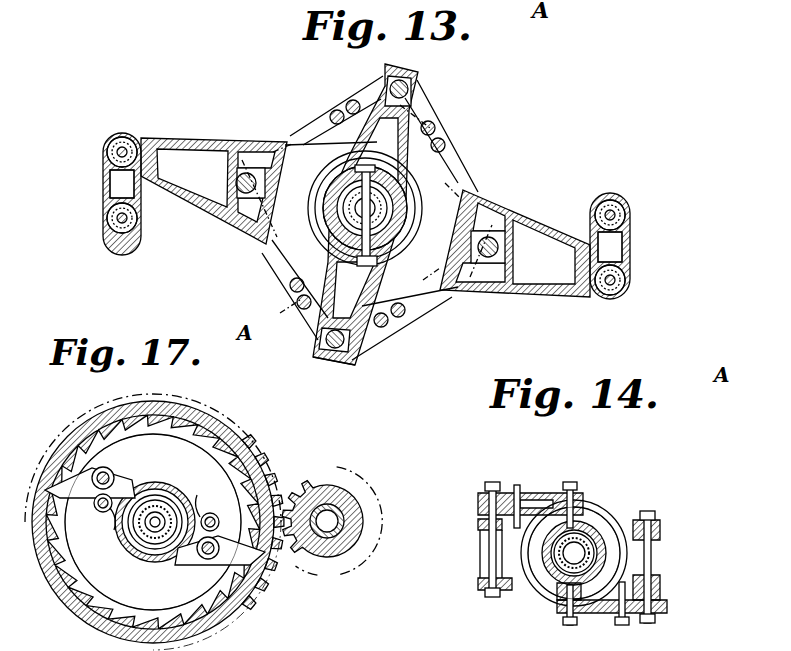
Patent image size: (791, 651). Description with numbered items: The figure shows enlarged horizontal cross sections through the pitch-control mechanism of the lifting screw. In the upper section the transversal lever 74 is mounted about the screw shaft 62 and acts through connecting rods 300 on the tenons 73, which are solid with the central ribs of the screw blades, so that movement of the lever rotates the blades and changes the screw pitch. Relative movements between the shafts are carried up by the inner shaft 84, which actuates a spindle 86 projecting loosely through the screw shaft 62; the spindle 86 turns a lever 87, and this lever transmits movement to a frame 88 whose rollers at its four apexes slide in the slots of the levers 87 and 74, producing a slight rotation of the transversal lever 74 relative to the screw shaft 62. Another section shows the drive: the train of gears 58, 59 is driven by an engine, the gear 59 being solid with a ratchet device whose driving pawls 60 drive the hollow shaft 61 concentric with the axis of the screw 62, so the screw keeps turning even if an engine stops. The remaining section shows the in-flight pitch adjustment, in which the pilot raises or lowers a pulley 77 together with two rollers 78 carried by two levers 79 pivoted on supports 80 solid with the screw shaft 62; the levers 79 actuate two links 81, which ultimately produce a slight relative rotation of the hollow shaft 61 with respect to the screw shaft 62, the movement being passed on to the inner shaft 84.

In FIG. 13A, the connecting rods 300 is at (136, 228).
In FIG. 13A, the tenons 73 is at (133, 232).
In FIG. 13A, the transversal lever 74 is at (240, 230).
In FIG. 13A, the screw shaft 62 is at (402, 195).
In FIG. 17A, the screw shaft 62 is at (133, 537).
In FIG. 14A, the screw shaft 62 is at (553, 567).
In FIG. 13A, the frame 88 is at (417, 113).
In FIG. 13A, the inner shaft 84 is at (340, 217).
In FIG. 17A, the inner shaft 84 is at (140, 545).
In FIG. 14A, the inner shaft 84 is at (583, 550).
In FIG. 13A, the spindle 86 is at (410, 300).
In FIG. 13A, the lever 87 is at (320, 313).
In FIG. 17A, the hollow shaft 61 is at (154, 522).
In FIG. 17A, the driving pawls 60 is at (118, 484).
In FIG. 17A, the gear 59 is at (277, 483).
In FIG. 17A, the gear 58 is at (305, 560).
In FIG. 14A, the pulley 77 is at (592, 527).
In FIG. 14A, the rollers 78 is at (550, 530).
In FIG. 14A, the levers 79 is at (550, 490).
In FIG. 14A, the supports 80 is at (487, 573).
In FIG. 14A, the links 81 is at (512, 512).